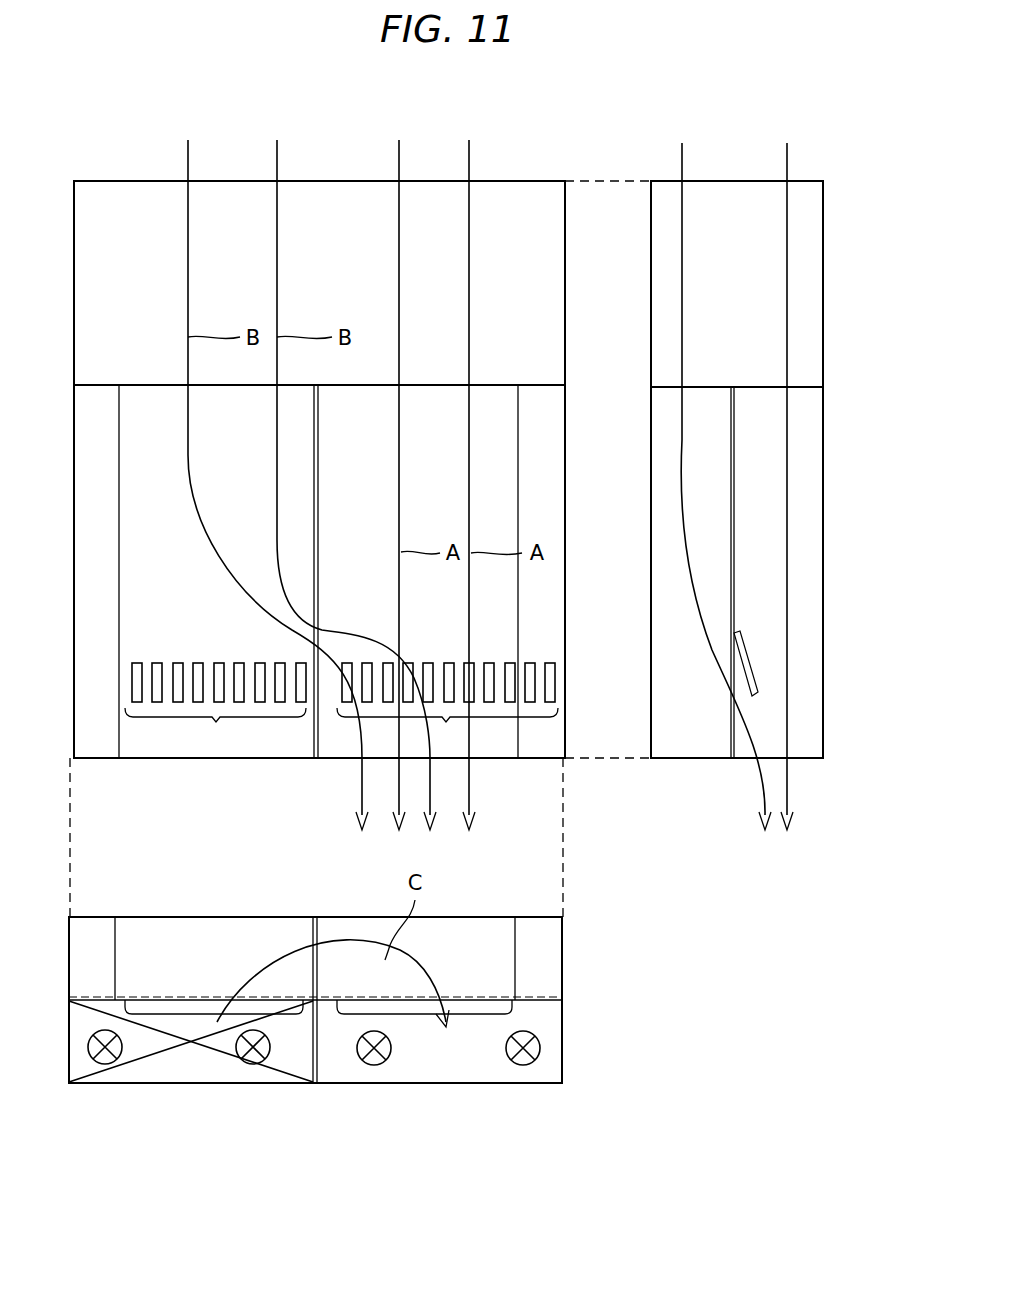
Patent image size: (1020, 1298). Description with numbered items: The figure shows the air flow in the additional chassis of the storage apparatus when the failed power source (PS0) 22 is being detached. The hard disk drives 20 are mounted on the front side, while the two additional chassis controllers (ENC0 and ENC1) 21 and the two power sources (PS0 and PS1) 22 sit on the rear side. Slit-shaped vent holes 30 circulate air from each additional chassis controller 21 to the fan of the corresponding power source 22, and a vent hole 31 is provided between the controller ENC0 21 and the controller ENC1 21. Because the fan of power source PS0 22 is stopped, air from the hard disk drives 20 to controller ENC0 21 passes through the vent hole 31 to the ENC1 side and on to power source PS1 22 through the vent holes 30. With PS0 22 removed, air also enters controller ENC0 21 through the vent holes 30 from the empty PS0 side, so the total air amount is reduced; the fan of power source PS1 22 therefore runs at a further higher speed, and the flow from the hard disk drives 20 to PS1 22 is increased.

The hard disk drive 20 is at (532, 200).
The additional chassis controller 21 is at (130, 497).
The power source 22 is at (795, 497).
The vent hole 30 is at (731, 697).
The vent hole 31 is at (318, 612).